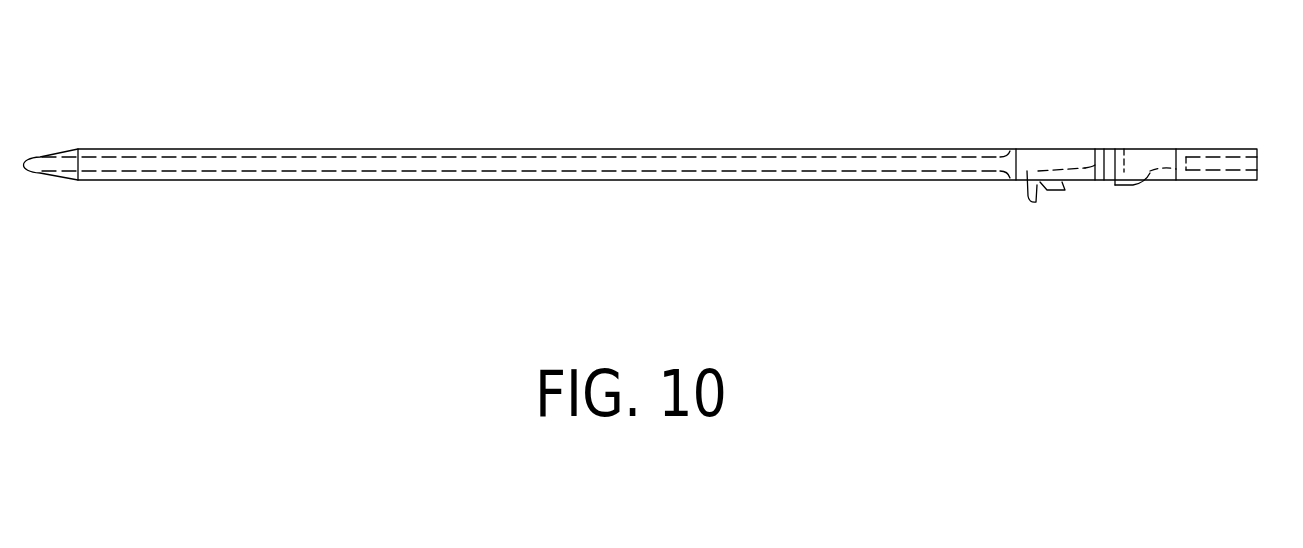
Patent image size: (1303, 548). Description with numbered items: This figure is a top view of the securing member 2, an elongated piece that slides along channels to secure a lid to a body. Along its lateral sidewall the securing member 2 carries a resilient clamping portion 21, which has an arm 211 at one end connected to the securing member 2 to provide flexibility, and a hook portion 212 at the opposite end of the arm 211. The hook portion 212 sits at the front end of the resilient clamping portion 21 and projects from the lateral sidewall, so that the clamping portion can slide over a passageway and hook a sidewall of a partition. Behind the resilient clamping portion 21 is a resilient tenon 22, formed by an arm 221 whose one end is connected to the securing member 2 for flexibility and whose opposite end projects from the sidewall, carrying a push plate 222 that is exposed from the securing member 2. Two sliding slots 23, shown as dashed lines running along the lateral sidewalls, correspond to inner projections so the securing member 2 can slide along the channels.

The securing member 2 is at (494, 193).
The resilient clamping portion 21 is at (988, 239).
The arm 211 is at (1063, 185).
The hook portion 212 is at (1027, 190).
The resilient tenon 22 is at (1198, 177).
The arm 221 is at (1175, 170).
The push plate 222 is at (1121, 148).
The sliding slots 23 is at (655, 147).